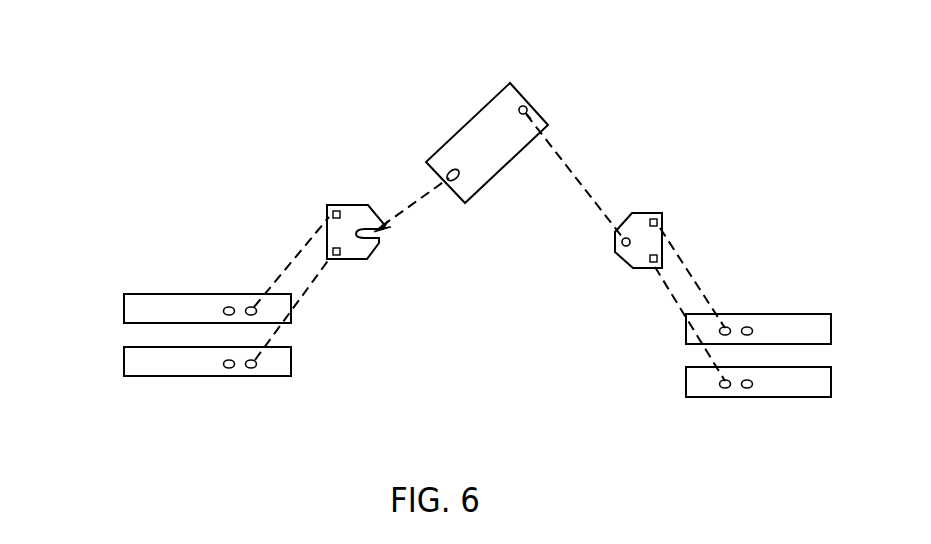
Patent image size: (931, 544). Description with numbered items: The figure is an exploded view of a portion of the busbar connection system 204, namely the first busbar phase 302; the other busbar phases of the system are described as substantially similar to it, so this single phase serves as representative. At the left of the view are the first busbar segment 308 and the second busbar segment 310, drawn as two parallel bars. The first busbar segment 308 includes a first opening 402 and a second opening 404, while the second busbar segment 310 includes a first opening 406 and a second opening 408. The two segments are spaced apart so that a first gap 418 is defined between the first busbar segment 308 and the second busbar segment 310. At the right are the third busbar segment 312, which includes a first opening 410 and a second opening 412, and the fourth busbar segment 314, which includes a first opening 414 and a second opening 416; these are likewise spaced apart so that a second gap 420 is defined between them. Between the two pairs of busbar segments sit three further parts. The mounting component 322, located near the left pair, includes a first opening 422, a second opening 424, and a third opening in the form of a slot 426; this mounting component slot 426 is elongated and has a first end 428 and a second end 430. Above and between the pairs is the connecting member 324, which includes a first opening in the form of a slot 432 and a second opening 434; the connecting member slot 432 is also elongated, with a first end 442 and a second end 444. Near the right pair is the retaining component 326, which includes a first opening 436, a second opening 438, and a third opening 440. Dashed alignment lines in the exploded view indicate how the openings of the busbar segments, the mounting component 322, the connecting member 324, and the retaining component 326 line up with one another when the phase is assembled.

The busbar connection system 204 is at (290, 87).
The first busbar phase 302 is at (108, 333).
The first busbar segment 308 is at (141, 294).
The second busbar segment 310 is at (131, 377).
The third busbar segment 312 is at (825, 314).
The fourth busbar segment 314 is at (826, 398).
The mounting component 322 is at (366, 261).
The connecting member 324 is at (514, 160).
The retaining component 326 is at (663, 218).
The first opening 402 is at (251, 306).
The second opening 404 is at (229, 306).
The first opening 406 is at (251, 369).
The second opening 408 is at (229, 369).
The first opening 410 is at (725, 326).
The second opening 412 is at (747, 326).
The first opening 414 is at (725, 389).
The second opening 416 is at (747, 389).
The first gap 418 is at (296, 323).
The second gap 420 is at (683, 344).
The first opening 422 is at (334, 206).
The second opening 424 is at (338, 260).
The slot 426 is at (393, 226).
The first end 428 is at (358, 228).
The second end 430 is at (382, 244).
The slot 432 is at (448, 172).
The second opening 434 is at (528, 108).
The first opening 436 is at (653, 216).
The second opening 438 is at (653, 264).
The third opening 440 is at (621, 245).
The first end 442 is at (466, 204).
The second end 444 is at (455, 171).